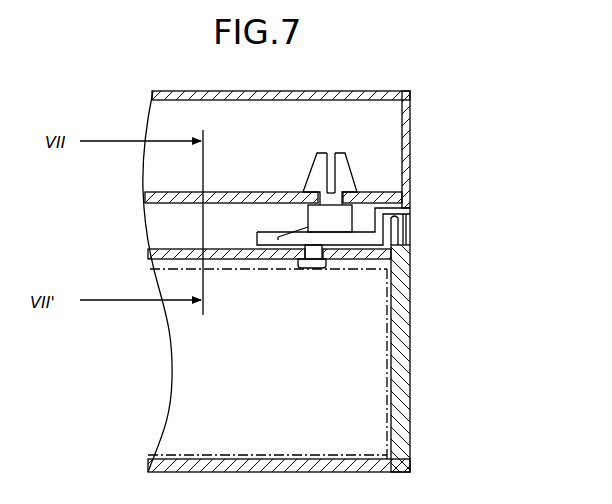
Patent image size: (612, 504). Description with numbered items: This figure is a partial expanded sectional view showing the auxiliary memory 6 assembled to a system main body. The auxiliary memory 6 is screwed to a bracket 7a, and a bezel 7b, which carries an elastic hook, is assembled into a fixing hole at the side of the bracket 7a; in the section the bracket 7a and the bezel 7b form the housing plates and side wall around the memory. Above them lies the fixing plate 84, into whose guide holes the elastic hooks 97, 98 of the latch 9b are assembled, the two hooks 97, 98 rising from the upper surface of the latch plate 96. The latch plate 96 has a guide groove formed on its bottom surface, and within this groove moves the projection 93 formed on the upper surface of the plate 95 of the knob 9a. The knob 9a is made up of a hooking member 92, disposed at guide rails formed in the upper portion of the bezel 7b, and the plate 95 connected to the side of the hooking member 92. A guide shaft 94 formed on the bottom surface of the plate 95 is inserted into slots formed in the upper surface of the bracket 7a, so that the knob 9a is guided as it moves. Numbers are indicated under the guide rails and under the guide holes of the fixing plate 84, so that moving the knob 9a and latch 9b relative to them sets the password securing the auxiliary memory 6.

The auxiliary memory 6 is at (380, 399).
The bracket 7a is at (158, 252).
The bezel 7b is at (398, 335).
The fixing plate 84 is at (150, 196).
The knob 9a is at (437, 219).
The latch 9b is at (373, 158).
The hooking member 92 is at (400, 213).
The projection 93 is at (306, 226).
The guide shaft 94 is at (318, 268).
The plate 95 is at (281, 243).
The plate 96 is at (336, 219).
The hook 97 is at (322, 172).
The hook 98 is at (347, 165).